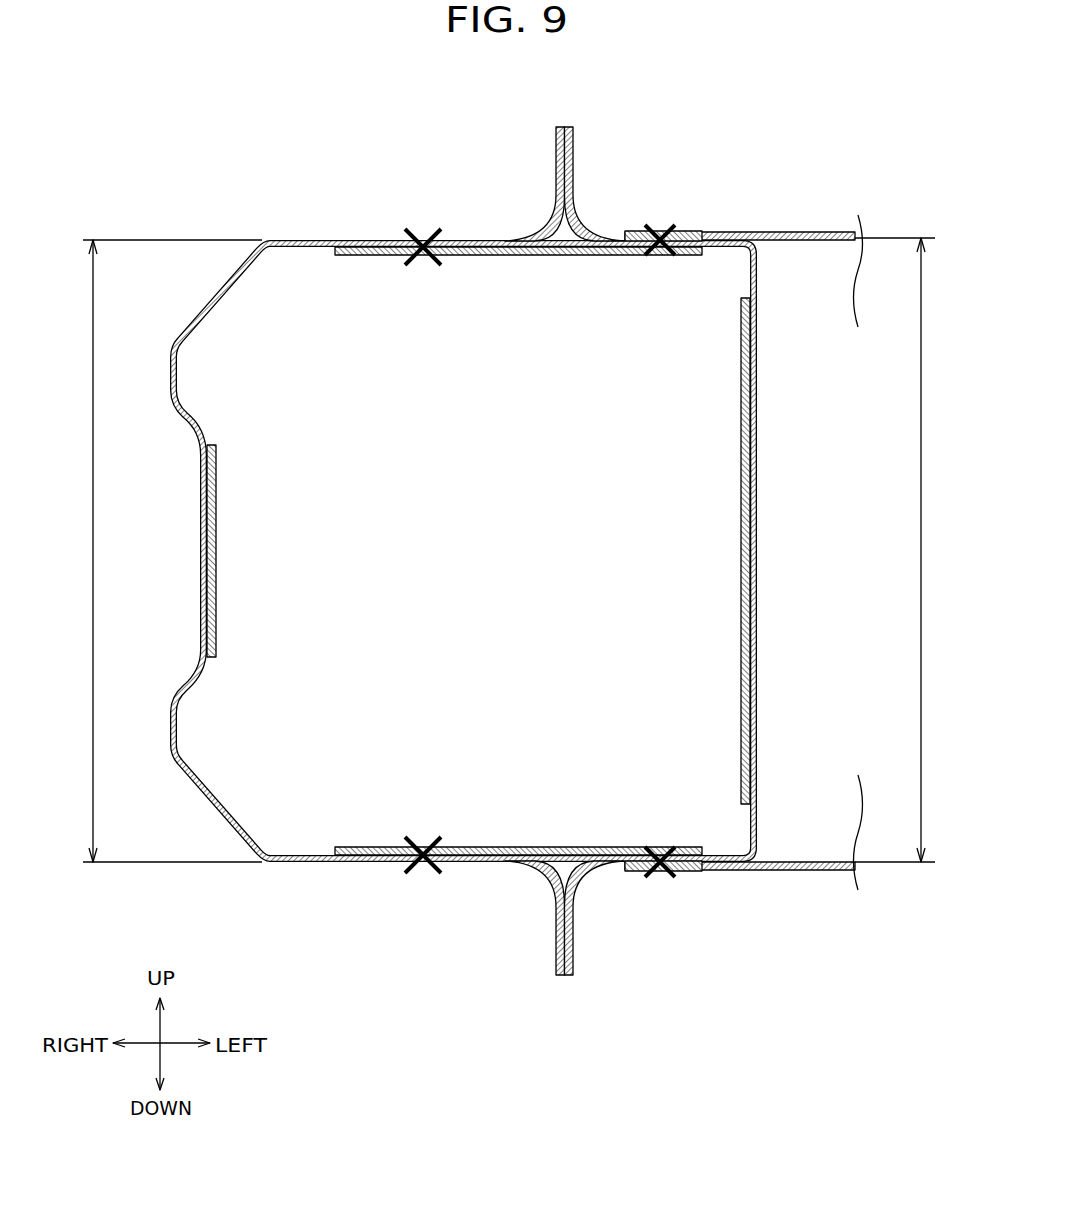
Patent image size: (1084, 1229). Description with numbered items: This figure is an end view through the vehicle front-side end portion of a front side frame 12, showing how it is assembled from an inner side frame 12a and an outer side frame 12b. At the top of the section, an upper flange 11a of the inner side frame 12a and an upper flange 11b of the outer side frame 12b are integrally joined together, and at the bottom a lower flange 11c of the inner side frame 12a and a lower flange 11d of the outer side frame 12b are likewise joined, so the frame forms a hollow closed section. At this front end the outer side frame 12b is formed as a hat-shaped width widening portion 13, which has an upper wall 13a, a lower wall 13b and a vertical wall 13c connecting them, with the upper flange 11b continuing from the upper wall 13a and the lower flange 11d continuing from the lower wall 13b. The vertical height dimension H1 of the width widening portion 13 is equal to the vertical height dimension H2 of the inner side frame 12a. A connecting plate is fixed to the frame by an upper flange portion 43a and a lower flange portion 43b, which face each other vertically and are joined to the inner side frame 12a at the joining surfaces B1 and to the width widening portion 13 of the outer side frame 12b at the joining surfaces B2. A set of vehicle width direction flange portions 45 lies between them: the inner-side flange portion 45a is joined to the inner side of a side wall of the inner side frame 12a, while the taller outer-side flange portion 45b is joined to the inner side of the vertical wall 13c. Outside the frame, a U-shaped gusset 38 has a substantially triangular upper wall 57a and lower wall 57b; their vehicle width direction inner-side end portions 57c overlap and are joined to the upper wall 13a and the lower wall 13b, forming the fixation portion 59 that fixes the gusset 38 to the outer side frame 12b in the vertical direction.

The front side frame 12 is at (288, 148).
The inner side frame 12a is at (190, 792).
The outer side frame 12b is at (765, 587).
The upper flange 11a is at (556, 130).
The upper flange 11b is at (573, 130).
The lower flange 11c is at (556, 972).
The lower flange 11d is at (573, 972).
The width widening portion 13 is at (760, 438).
The upper wall 13a is at (700, 236).
The lower wall 13b is at (700, 866).
The vertical wall 13c is at (752, 400).
The gusset 38 is at (828, 213).
The upper flange portion 43a is at (545, 255).
The lower flange portion 43b is at (545, 847).
The vehicle width direction flange portions 45 is at (607, 519).
The vehicle width direction inner-side flange portion 45a is at (216, 530).
The vehicle width direction outer-side flange portion 45b is at (741, 530).
The upper wall 57a is at (780, 232).
The lower wall 57b is at (780, 870).
The vehicle width direction inner-side end portions 57c is at (668, 230).
The fixation portion 59 is at (712, 980).
The upper and lower joining surfaces B1 is at (460, 240).
The upper and lower joining surfaces B2 is at (635, 232).
The vertical height dimension H1 is at (911, 550).
The vertical height dimension H2 is at (156, 551).